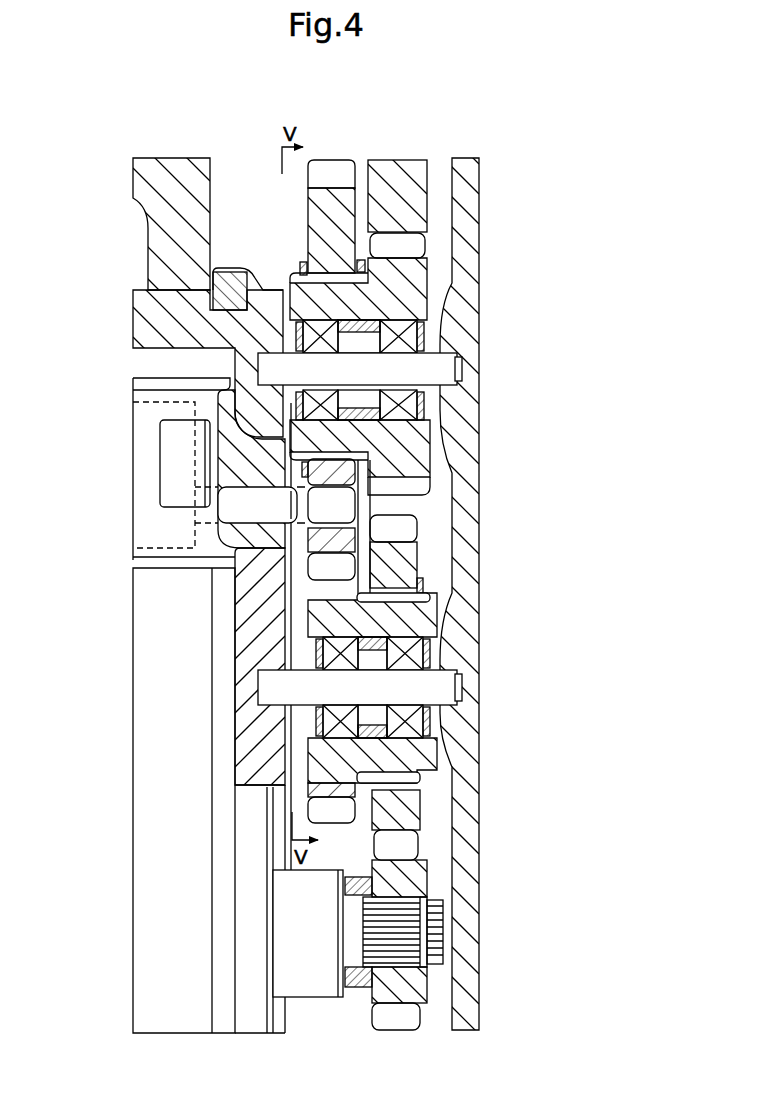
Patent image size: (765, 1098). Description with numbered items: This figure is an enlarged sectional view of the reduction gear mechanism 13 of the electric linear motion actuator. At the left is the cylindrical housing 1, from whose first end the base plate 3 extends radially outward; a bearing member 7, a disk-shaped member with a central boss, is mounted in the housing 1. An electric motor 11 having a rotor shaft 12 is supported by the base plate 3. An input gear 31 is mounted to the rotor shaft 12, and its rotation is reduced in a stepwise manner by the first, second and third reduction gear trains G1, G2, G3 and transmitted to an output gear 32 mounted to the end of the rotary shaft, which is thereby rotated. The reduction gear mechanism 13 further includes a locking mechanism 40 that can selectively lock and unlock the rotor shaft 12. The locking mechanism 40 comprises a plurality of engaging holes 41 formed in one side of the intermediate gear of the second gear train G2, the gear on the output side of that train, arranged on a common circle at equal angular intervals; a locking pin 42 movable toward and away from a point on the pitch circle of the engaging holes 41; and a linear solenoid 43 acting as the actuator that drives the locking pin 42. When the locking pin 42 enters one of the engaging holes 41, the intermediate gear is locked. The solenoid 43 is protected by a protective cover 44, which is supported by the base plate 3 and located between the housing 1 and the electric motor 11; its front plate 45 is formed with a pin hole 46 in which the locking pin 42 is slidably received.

The housing 1 is at (140, 310).
The base plate 3 is at (244, 636).
The bearing member 7 is at (160, 226).
The electric motor 11 is at (143, 688).
The rotor shaft 12 is at (318, 985).
The reduction gear mechanism 13 is at (424, 553).
The input gear 31 is at (413, 985).
The output gear 32 is at (398, 173).
The locking mechanism 40 is at (362, 512).
The engaging holes 41 is at (358, 494).
The locking pin 42 is at (245, 512).
The linear solenoid 43 is at (158, 430).
The protective cover 44 is at (143, 509).
The front plate 45 is at (220, 402).
The pin hole 46 is at (232, 494).
The first reduction gear train G1 is at (422, 828).
The second reduction gear train G2 is at (305, 575).
The third reduction gear train G3 is at (432, 238).